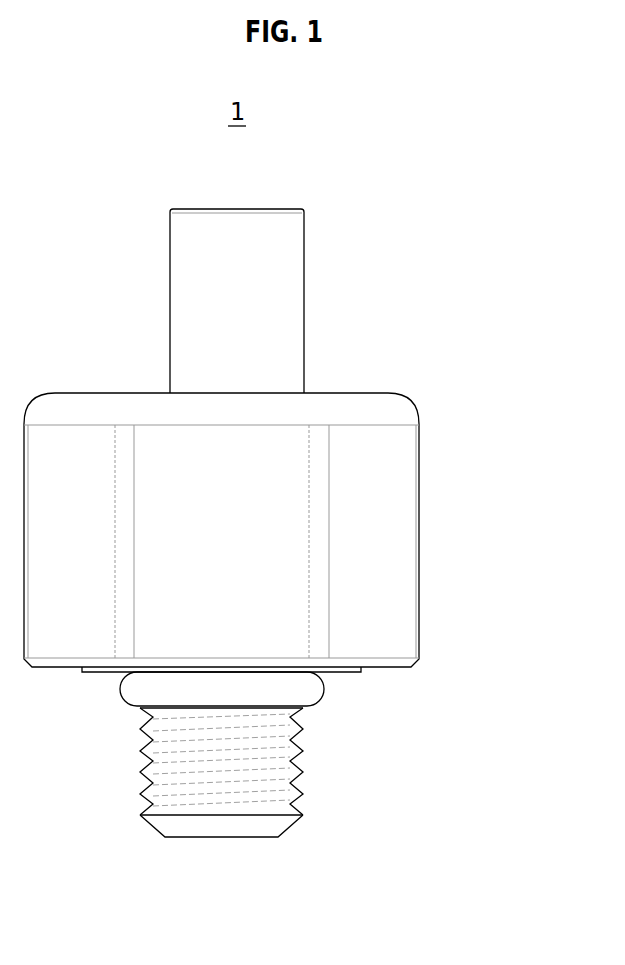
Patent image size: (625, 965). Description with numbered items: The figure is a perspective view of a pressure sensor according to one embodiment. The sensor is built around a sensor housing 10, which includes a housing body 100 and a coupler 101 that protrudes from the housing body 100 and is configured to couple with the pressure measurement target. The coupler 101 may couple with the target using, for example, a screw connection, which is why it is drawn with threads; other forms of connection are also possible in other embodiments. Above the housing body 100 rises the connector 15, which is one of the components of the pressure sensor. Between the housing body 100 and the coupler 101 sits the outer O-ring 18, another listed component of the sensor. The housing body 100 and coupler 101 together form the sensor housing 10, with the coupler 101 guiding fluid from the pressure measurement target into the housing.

The sensor housing 10 is at (510, 593).
The connector 15 is at (293, 303).
The outer O-ring 18 is at (125, 704).
The housing body 100 is at (411, 626).
The coupler 101 is at (292, 758).